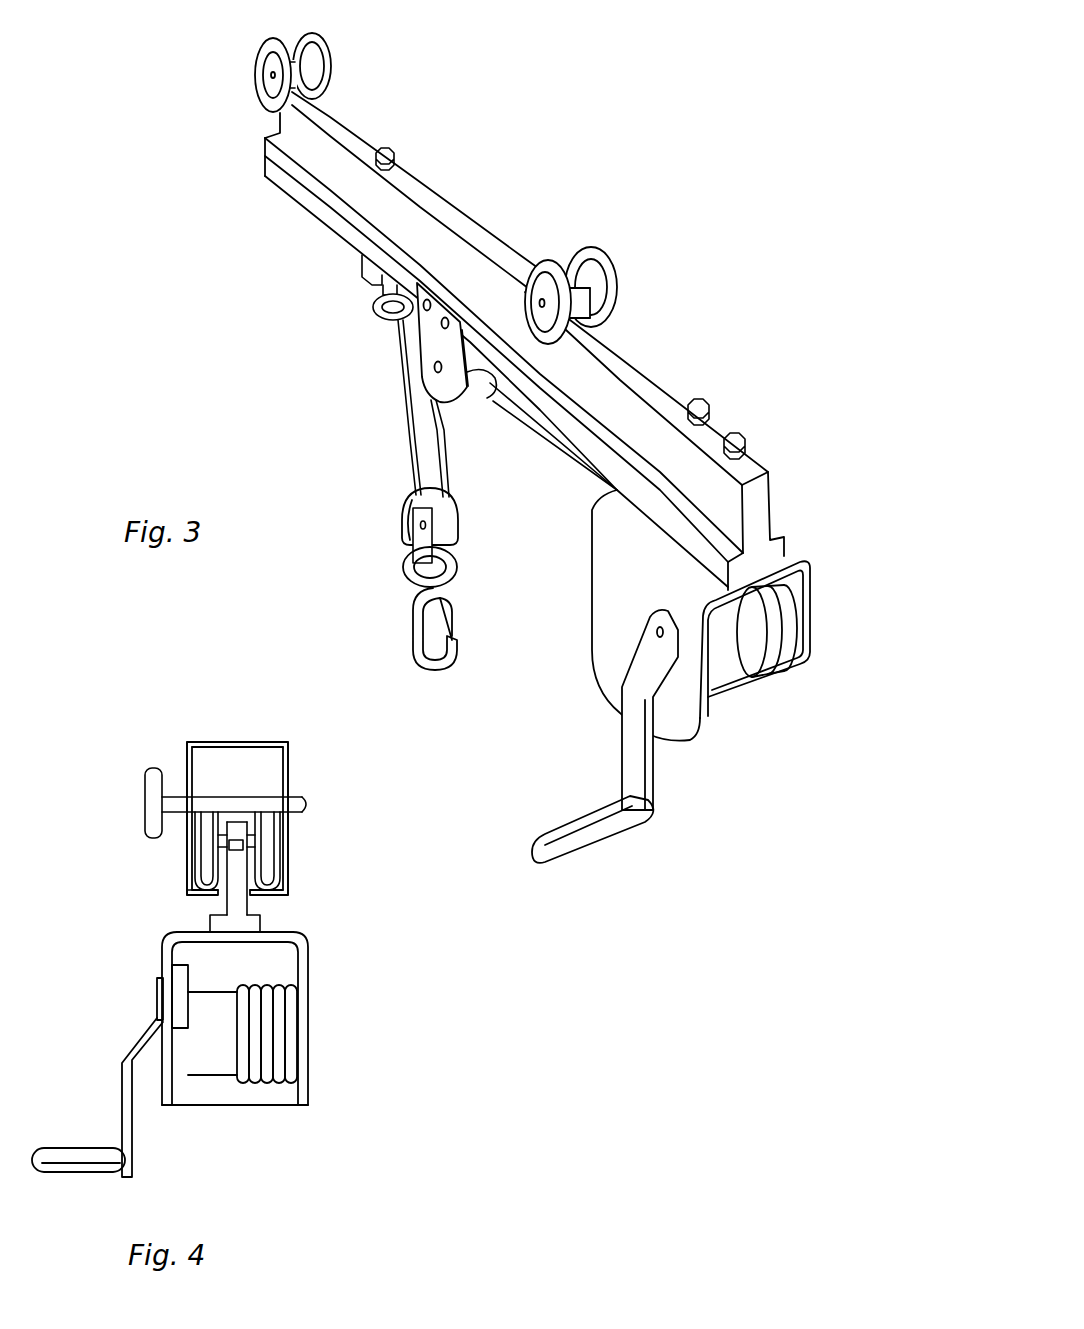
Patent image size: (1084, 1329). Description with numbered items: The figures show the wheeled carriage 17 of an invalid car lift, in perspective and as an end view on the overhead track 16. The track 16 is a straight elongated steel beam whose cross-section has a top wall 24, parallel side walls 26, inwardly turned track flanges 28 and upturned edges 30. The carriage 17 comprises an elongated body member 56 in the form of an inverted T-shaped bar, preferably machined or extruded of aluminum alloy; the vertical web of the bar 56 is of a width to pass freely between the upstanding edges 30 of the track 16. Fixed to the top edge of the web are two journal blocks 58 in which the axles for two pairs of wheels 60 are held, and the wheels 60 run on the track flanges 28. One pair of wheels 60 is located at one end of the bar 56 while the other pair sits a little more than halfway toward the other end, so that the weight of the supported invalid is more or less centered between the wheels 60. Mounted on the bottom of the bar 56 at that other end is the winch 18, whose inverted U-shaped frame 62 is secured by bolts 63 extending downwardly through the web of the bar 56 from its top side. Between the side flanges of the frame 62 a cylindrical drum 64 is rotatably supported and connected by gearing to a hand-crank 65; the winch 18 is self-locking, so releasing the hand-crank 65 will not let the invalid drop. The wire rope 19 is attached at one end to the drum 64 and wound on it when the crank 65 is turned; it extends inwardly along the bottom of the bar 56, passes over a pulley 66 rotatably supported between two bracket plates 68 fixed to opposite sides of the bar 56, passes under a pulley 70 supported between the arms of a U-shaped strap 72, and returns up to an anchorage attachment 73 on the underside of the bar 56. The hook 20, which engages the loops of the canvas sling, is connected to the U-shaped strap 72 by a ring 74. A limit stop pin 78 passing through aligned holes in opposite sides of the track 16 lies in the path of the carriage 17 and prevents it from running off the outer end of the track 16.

In FIG. 4, the overhead track 16 is at (300, 752).
In FIG. 3, the wheeled carriage 17 is at (484, 203).
In FIG. 3, the winch 18 is at (582, 655).
In FIG. 4, the winch 18 is at (335, 1030).
In FIG. 3, the wire rope 19 is at (410, 412).
In FIG. 4, the wire rope 19 is at (265, 1050).
In FIG. 3, the hook 20 is at (414, 625).
In FIG. 4, the top wall 24 is at (250, 742).
In FIG. 4, the side walls 26 is at (192, 768).
In FIG. 4, the track flanges 28 is at (186, 890).
In FIG. 4, the upturned edges 30 is at (246, 888).
In FIG. 3, the body member 56 is at (620, 402).
In FIG. 4, the body member 56 is at (235, 908).
In FIG. 3, the journal blocks 58 is at (300, 77).
In FIG. 3, the wheels 60 is at (305, 38).
In FIG. 4, the wheels 60 is at (270, 857).
In FIG. 3, the frame 62 is at (618, 552).
In FIG. 4, the frame 62 is at (305, 972).
In FIG. 3, the bolts 63 is at (700, 410).
In FIG. 4, the bolts 63 is at (256, 845).
In FIG. 3, the drum 64 is at (730, 668).
In FIG. 4, the drum 64 is at (208, 1057).
In FIG. 3, the hand-crank 65 is at (637, 750).
In FIG. 4, the hand-crank 65 is at (127, 1097).
In FIG. 3, the pulley 66 is at (483, 389).
In FIG. 3, the bracket plates 68 is at (435, 347).
In FIG. 3, the pulley 70 is at (406, 492).
In FIG. 3, the U-shaped strap 72 is at (413, 540).
In FIG. 3, the anchorage attachment 73 is at (368, 306).
In FIG. 3, the ring 74 is at (404, 570).
In FIG. 4, the limit stop pin 78 is at (152, 798).